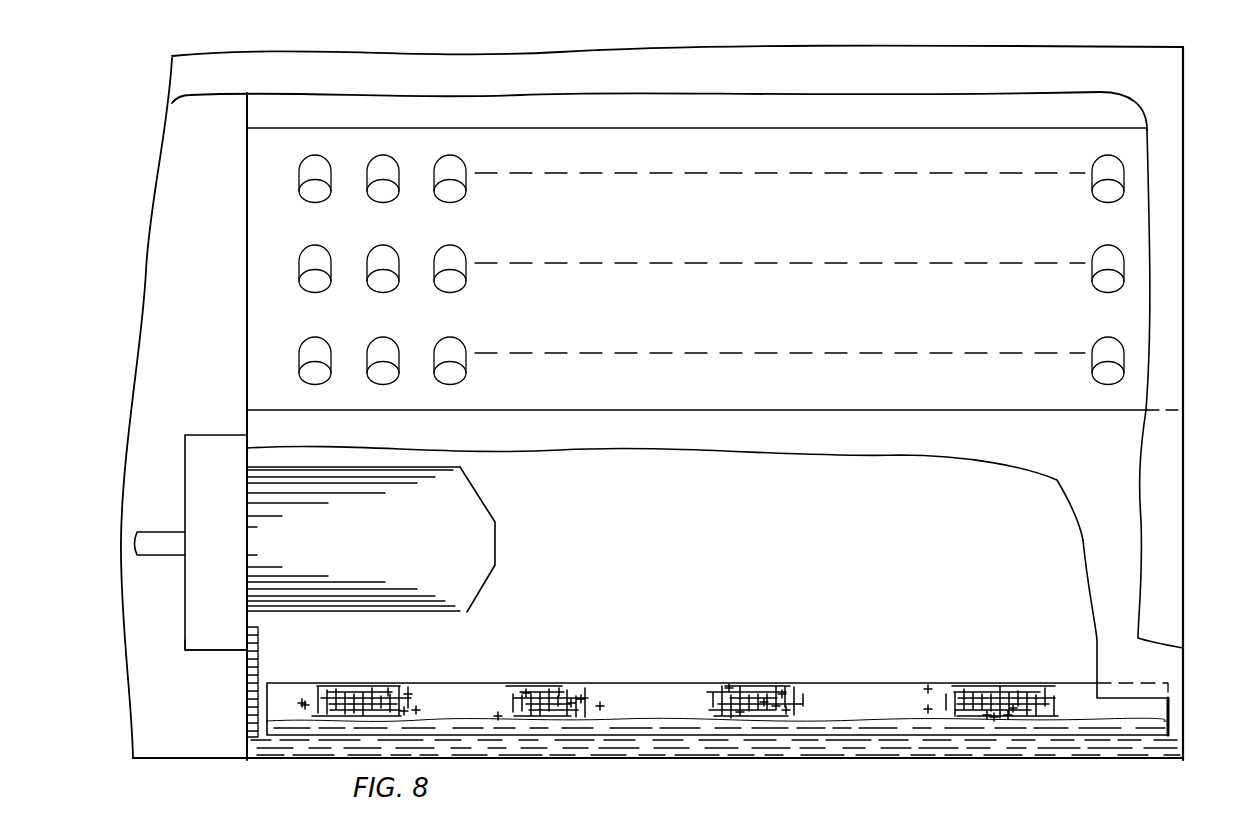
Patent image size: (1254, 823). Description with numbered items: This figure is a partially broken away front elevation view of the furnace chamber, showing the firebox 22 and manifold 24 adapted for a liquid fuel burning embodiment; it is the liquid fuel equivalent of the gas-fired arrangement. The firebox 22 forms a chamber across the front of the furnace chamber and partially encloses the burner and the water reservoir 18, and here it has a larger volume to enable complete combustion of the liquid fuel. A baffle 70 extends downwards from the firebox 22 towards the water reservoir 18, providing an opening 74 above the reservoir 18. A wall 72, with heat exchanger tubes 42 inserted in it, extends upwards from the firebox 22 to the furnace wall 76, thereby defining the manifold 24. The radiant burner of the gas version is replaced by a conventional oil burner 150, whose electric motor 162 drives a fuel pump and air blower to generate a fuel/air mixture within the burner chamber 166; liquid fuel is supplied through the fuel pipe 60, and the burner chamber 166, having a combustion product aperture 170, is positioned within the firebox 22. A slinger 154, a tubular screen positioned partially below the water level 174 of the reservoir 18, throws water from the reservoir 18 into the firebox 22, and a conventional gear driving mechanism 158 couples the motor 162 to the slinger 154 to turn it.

The water reservoir 18 is at (935, 752).
The firebox 22 is at (1047, 512).
The manifold 24 is at (1137, 300).
The heat exchanger tubes 42 is at (1112, 172).
The fuel pipe 60 is at (170, 532).
The baffle 70 is at (905, 455).
The wall 72 is at (1127, 400).
The opening 74 is at (1175, 713).
The furnace wall 76 is at (1170, 102).
The oil burner 150 is at (223, 430).
The slinger 154 is at (608, 692).
The gear driving mechanism 158 is at (262, 668).
The electric motor 162 is at (203, 637).
The burner chamber 166 is at (477, 560).
The combustion product aperture 170 is at (495, 538).
The water level 174 is at (1172, 727).